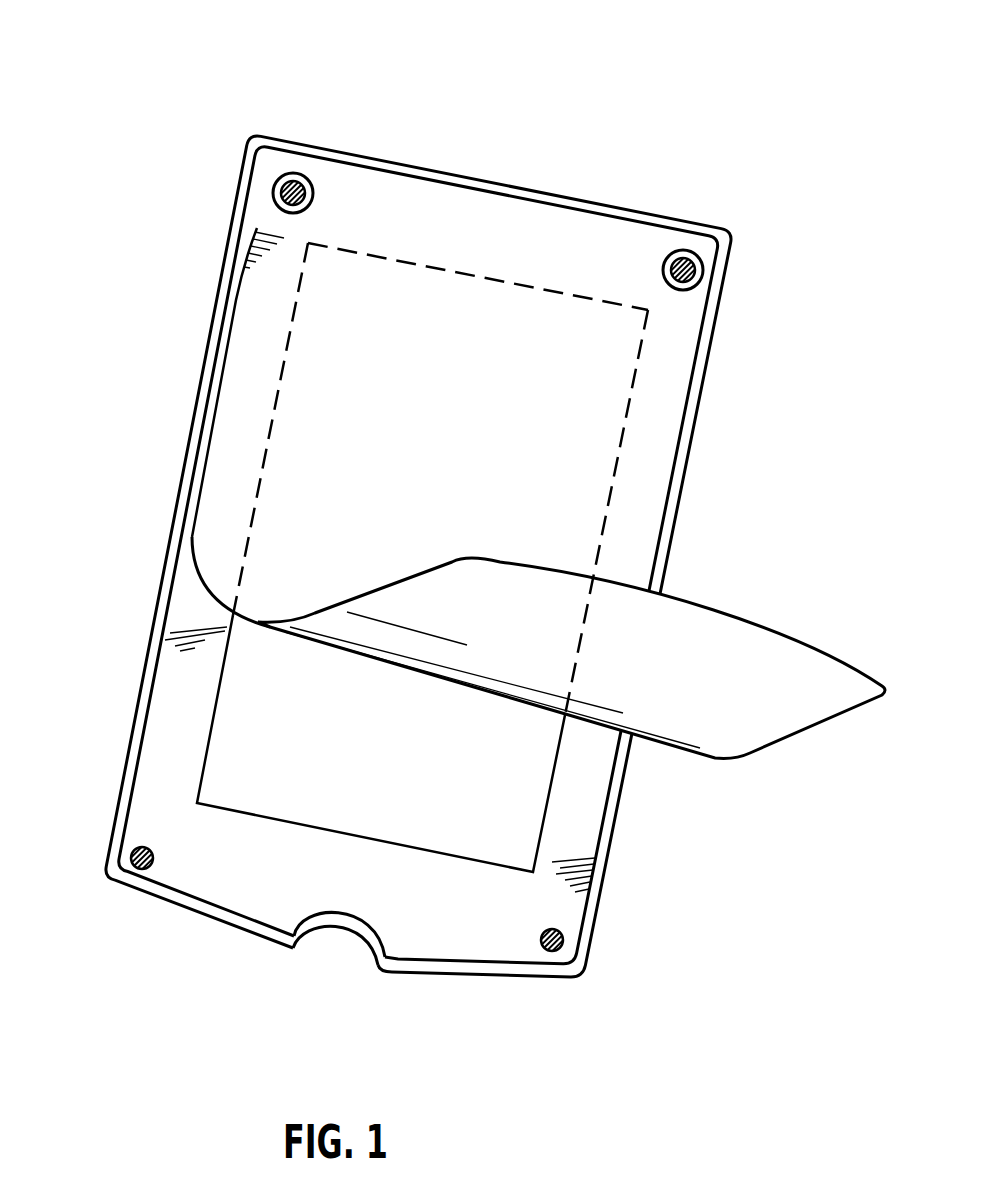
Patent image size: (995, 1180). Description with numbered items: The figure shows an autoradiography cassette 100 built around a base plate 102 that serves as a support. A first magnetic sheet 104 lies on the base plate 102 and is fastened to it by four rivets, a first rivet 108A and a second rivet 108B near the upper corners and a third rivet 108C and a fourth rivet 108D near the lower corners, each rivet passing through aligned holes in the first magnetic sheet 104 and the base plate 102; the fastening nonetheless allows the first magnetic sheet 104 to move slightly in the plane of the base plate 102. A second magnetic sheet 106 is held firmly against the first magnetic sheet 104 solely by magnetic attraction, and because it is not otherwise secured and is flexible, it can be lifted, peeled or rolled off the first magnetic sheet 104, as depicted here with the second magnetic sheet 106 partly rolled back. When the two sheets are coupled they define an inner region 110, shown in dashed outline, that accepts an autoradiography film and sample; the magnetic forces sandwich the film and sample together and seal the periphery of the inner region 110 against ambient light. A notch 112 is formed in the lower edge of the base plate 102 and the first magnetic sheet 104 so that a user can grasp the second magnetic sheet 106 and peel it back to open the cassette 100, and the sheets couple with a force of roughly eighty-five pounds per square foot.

The autoradiography cassette 100 is at (283, 98).
The base plate 102 is at (127, 770).
The first magnetic sheet 104 is at (175, 693).
The second magnetic sheet 106 is at (208, 538).
The first rivet 108A is at (297, 175).
The second rivet 108B is at (681, 251).
The third rivet 108C is at (142, 869).
The fourth rivet 108D is at (564, 938).
The inner region 110 is at (405, 758).
The notch 112 is at (342, 935).